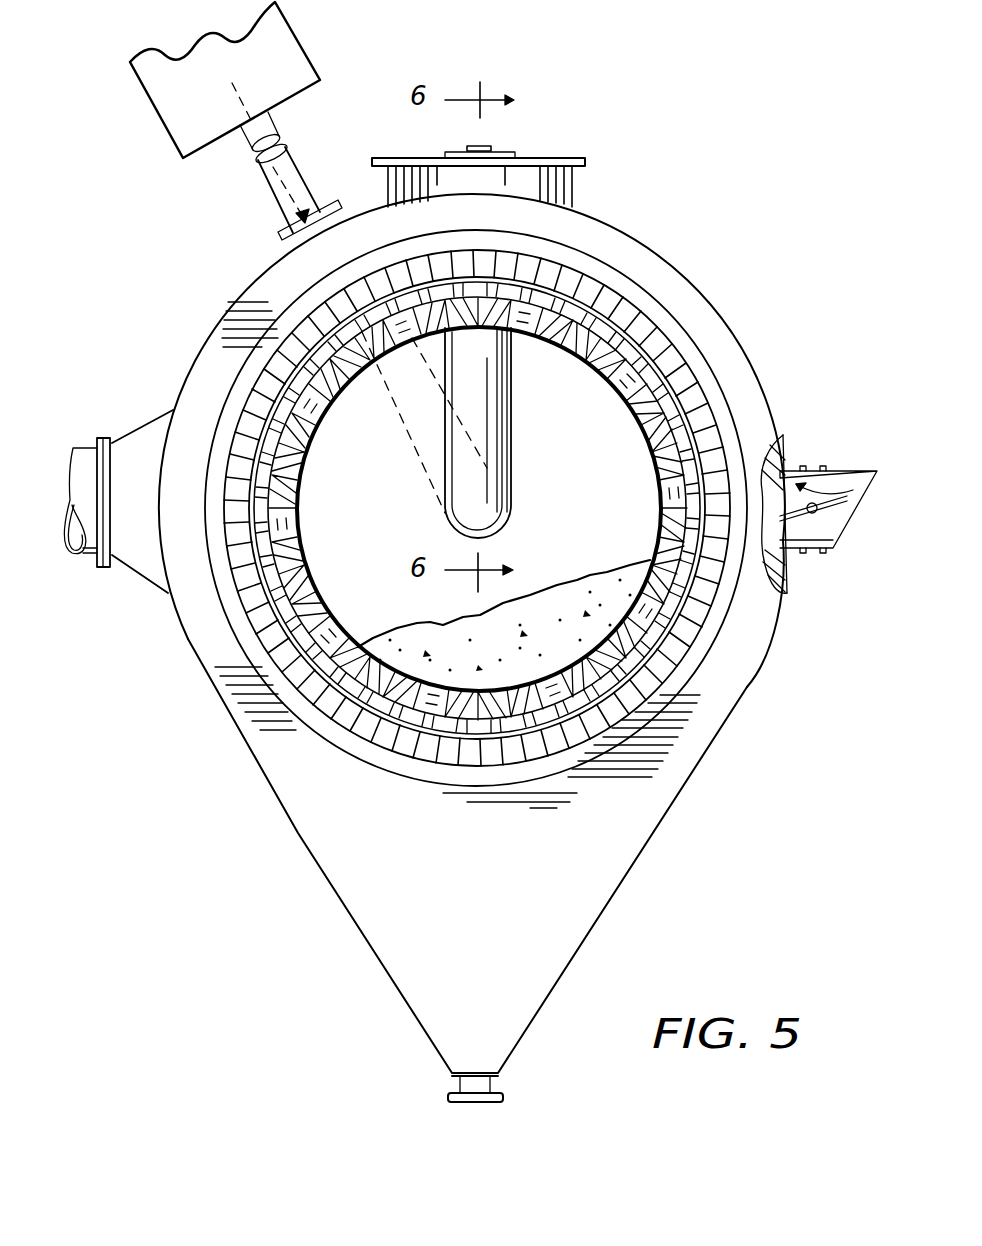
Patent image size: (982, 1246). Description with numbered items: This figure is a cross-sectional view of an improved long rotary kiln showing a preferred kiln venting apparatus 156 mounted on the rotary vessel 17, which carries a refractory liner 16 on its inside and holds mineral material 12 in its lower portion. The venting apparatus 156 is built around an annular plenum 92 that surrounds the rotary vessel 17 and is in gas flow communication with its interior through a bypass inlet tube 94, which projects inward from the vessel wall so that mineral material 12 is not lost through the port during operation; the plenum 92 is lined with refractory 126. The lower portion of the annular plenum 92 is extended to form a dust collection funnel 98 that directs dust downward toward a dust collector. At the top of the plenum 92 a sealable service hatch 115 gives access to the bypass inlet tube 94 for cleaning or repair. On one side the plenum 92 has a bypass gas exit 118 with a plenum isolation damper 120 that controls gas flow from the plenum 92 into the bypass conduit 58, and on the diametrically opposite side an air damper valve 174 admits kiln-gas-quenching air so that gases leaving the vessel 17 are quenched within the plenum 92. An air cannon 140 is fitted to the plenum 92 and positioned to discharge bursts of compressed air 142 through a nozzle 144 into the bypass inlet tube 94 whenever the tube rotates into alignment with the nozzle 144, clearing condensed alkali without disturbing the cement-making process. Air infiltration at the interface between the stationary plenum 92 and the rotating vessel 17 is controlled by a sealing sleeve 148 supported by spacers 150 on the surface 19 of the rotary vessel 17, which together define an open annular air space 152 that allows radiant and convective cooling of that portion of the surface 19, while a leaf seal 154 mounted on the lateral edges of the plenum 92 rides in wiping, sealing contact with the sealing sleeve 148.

The mineral material 12 is at (555, 631).
The refractory liner 16 is at (650, 312).
The rotary vessel 17 is at (598, 283).
The surface of rotary vessel 19 is at (358, 330).
The bypass conduit 58 is at (87, 553).
The annular plenum 92 is at (615, 212).
The bypass inlet tube 94 is at (485, 400).
The dust collection funnel 98 is at (592, 945).
The sealable service hatch 115 is at (512, 155).
The bypass gas exit 118 is at (60, 500).
The plenum isolation damper 120 is at (107, 437).
The refractory 126 is at (785, 452).
The air cannon 140 is at (305, 63).
The compressed air 142 is at (308, 177).
The nozzle 144 is at (292, 153).
The sealing sleeve 148 is at (707, 420).
The spacers 150 is at (655, 458).
The annular air space 152 is at (335, 380).
The leaf seal 154 is at (540, 262).
The kiln venting apparatus 156 is at (747, 261).
The air damper valve 174 is at (830, 507).